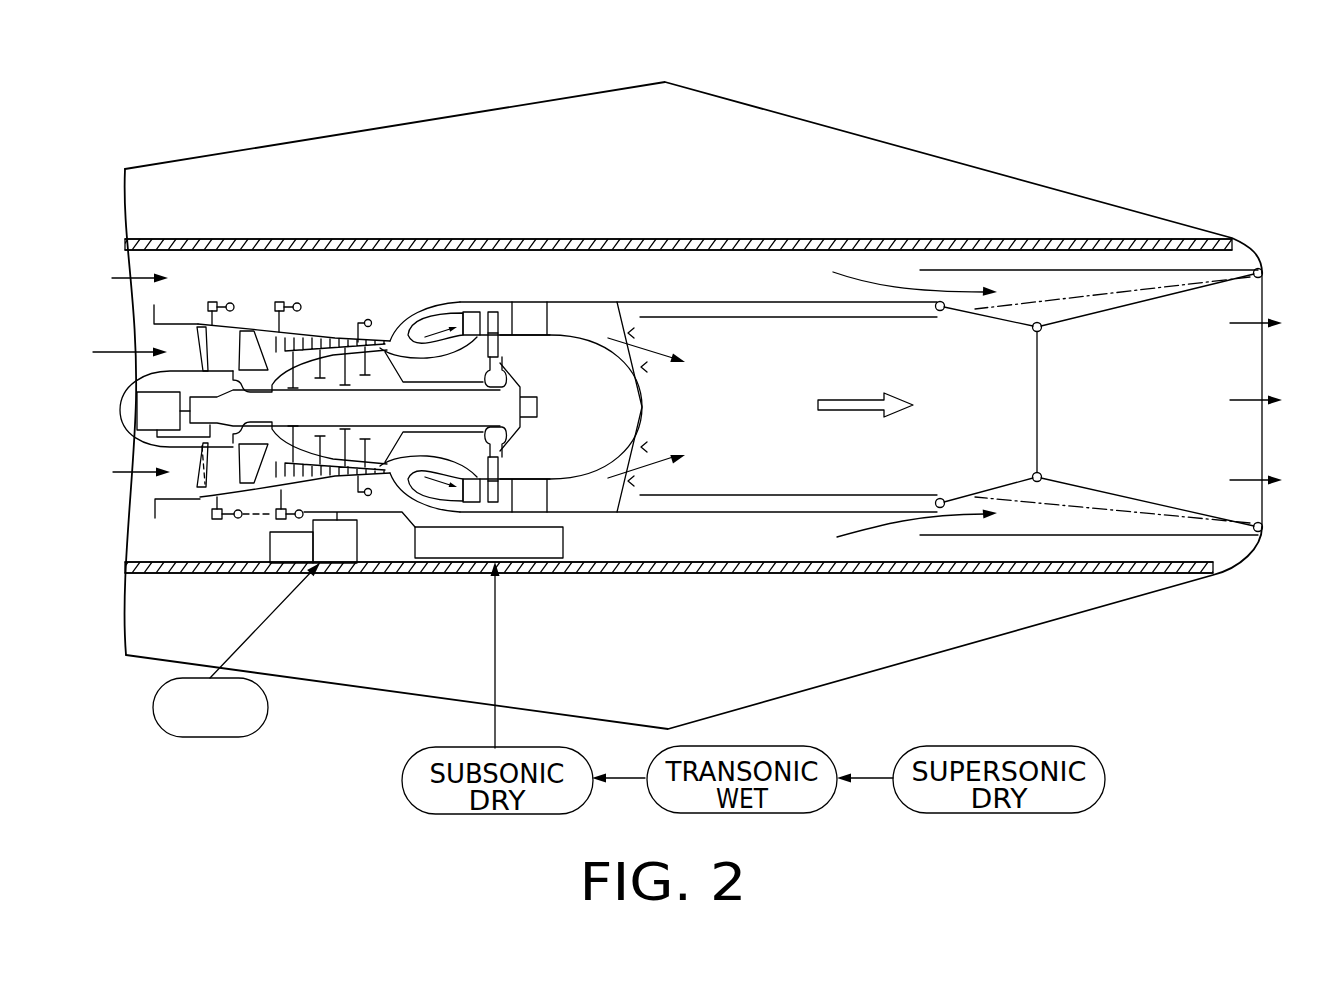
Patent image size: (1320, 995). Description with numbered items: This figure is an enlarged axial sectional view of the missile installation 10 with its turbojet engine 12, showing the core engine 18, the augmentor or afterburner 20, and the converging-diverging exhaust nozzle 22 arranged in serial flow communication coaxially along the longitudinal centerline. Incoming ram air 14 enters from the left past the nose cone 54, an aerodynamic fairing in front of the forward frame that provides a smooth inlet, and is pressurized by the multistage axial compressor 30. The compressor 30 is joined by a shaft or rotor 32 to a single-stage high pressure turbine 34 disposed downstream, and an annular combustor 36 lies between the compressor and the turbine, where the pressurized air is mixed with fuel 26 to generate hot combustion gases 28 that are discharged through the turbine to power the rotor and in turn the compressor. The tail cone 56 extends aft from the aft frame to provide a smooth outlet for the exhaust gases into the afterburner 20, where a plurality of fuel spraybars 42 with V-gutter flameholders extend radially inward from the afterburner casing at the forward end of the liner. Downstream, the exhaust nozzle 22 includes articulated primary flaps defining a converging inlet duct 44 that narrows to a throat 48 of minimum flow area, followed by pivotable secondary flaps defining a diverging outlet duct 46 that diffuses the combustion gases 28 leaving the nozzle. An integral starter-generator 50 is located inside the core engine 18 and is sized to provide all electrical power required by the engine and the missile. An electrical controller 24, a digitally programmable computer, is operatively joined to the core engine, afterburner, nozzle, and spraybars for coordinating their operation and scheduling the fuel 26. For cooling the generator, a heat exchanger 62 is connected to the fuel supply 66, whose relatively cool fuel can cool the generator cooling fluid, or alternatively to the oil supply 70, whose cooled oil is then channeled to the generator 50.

The gas turbine engine 10 is at (230, 150).
The turbojet engine 12 is at (586, 272).
The incoming air 14 is at (866, 282).
The core engine 18 is at (338, 361).
The augmentor or afterburner 20 is at (665, 290).
The converging-diverging exhaust nozzle 22 is at (1091, 365).
The electrical controller 24 is at (566, 544).
The fuel 26 is at (243, 642).
The hot combustion gases 28 is at (846, 383).
The multistage axial compressor 30 is at (335, 331).
The shaft or rotor 32 is at (449, 378).
The single-stage high pressure turbine 34 is at (492, 302).
The annular combustor 36 is at (432, 376).
The fuel spraybars 42 is at (640, 457).
The converging inlet duct 44 is at (950, 423).
The diverging outlet duct 46 is at (1141, 415).
The throat 48 is at (1040, 390).
The integral starter-generator 50 is at (152, 413).
The nose cone 54 is at (125, 432).
The tail cone 56 is at (590, 419).
The heat exchanger 62 is at (338, 566).
The fuel supply 66 is at (211, 738).
The oil supply 70 is at (278, 566).